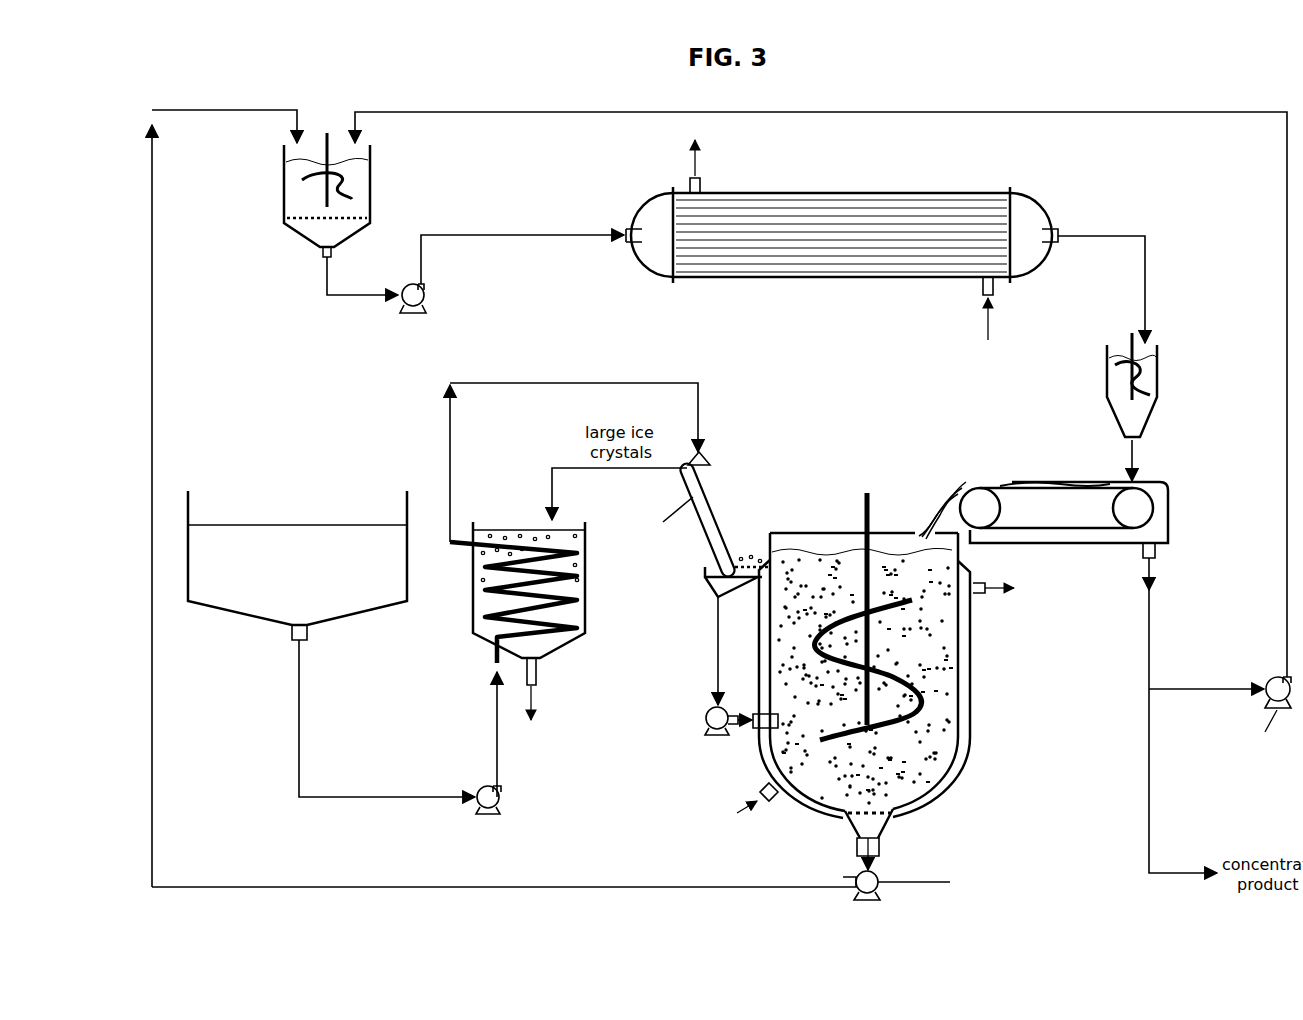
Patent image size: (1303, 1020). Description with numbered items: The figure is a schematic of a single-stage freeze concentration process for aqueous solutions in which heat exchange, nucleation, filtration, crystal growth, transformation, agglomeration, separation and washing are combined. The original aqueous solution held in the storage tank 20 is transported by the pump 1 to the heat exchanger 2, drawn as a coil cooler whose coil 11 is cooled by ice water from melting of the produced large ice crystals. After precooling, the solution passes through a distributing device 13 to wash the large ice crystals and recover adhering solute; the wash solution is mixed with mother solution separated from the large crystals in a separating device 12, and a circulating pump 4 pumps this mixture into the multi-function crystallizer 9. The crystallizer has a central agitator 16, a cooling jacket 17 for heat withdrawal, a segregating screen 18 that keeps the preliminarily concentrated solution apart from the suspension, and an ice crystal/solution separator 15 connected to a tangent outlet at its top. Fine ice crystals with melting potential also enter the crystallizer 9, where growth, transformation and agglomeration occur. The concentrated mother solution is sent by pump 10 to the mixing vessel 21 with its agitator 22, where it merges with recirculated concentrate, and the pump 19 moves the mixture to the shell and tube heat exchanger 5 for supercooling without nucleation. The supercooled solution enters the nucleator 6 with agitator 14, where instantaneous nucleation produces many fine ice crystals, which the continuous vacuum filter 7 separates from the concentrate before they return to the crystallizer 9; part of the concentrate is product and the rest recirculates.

The pump 1 is at (497, 800).
The heat exchanger 2 is at (565, 648).
The circulating pump 4 is at (705, 724).
The heat exchanger 5 is at (818, 280).
The nucleator 6 is at (1150, 410).
The continuous vacuum filter 7 is at (1065, 543).
The multi-function crystallizer 9 is at (940, 685).
The pump 10 is at (950, 882).
The heating coil 11 is at (485, 597).
The separating device 12 is at (705, 575).
The distributing device 13 is at (706, 455).
The agitator 14 is at (1115, 390).
The ice crystal/solution separator 15 is at (735, 555).
The central agitator 16 is at (862, 525).
The cooling jacket 17 is at (970, 640).
The segregating screen 18 is at (923, 805).
The pump 19 is at (424, 297).
The storage tank 20 is at (268, 618).
The mixing vessel 21 is at (373, 196).
The agitator 22 is at (303, 193).